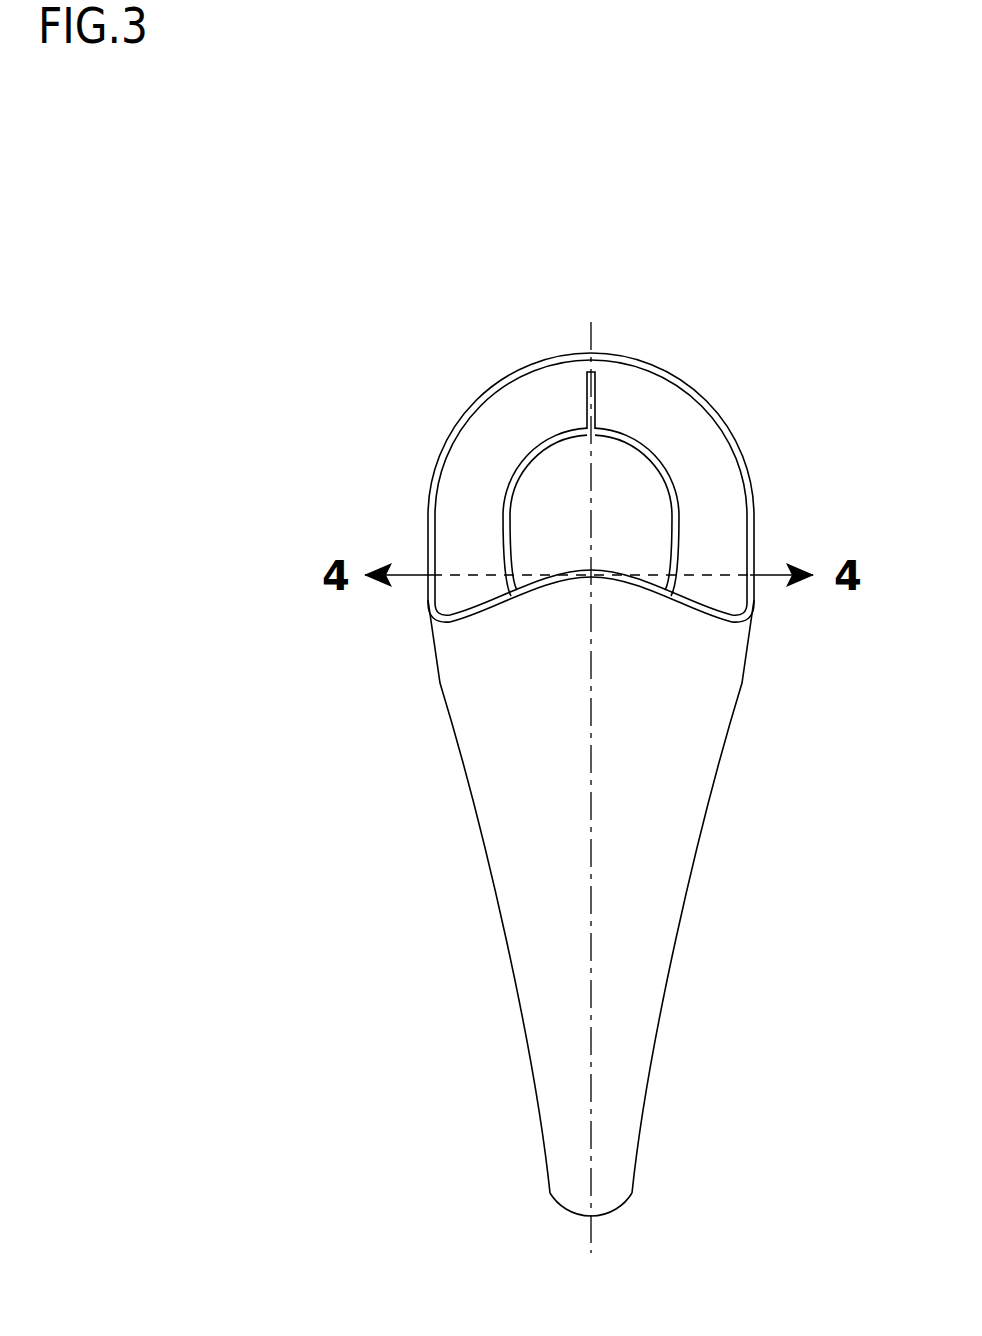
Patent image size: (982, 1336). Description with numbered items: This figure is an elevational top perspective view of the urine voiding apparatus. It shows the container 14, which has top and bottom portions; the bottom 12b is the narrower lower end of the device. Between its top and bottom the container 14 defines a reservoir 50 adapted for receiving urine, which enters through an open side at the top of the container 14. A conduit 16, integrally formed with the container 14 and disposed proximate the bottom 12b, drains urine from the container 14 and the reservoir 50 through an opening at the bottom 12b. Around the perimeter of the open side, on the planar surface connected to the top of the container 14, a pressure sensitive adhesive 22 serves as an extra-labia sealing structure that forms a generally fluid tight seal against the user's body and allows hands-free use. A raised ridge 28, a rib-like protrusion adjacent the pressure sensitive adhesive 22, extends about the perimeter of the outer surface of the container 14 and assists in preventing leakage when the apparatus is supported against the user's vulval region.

The bottom portion 12b is at (498, 895).
The container 14 is at (634, 908).
The conduit 16 is at (667, 980).
The pressure sensitive adhesive 22 is at (437, 478).
The raised ridge 28 is at (745, 478).
The reservoir 50 is at (575, 515).